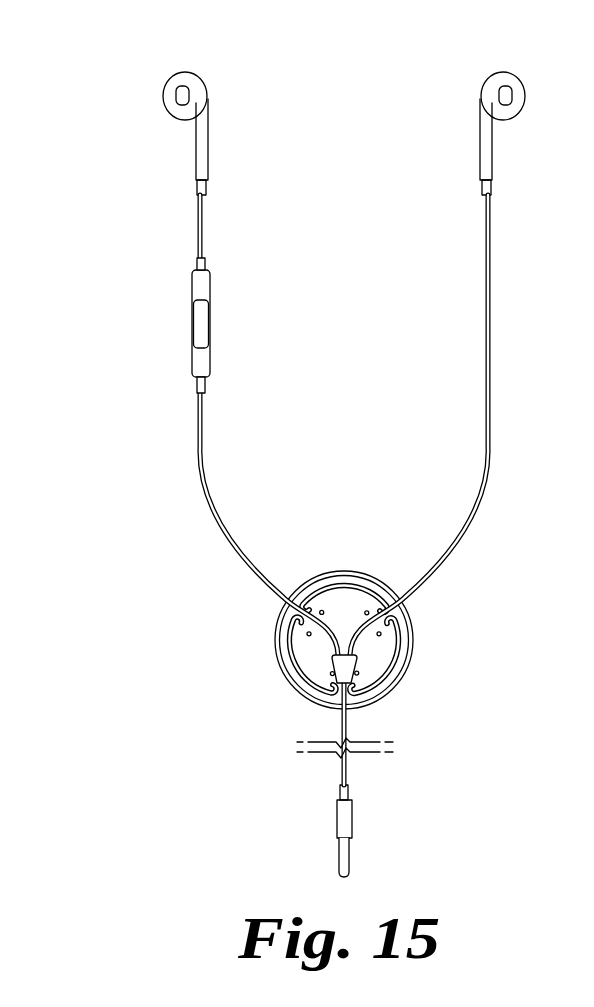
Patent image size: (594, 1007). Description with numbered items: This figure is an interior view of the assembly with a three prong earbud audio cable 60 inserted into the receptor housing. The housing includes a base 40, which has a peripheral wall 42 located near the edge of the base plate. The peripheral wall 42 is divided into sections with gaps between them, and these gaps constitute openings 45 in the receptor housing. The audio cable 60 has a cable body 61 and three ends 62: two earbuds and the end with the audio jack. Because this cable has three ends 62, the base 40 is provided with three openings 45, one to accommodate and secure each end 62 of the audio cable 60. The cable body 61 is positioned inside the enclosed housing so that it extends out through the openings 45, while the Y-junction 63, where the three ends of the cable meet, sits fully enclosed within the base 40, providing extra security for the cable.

The audio cable 60 is at (351, 460).
The ends 62 is at (163, 90).
The cable body 61 is at (355, 642).
The Y-junction 63 is at (332, 656).
The base 40 is at (366, 618).
The peripheral wall 42 is at (343, 582).
The openings 45 is at (397, 605).